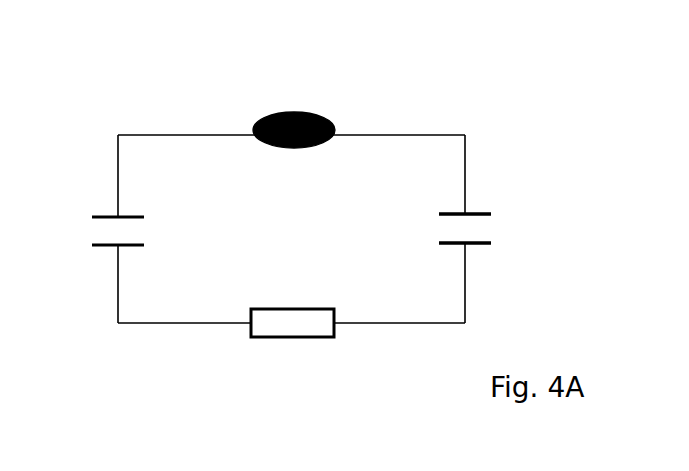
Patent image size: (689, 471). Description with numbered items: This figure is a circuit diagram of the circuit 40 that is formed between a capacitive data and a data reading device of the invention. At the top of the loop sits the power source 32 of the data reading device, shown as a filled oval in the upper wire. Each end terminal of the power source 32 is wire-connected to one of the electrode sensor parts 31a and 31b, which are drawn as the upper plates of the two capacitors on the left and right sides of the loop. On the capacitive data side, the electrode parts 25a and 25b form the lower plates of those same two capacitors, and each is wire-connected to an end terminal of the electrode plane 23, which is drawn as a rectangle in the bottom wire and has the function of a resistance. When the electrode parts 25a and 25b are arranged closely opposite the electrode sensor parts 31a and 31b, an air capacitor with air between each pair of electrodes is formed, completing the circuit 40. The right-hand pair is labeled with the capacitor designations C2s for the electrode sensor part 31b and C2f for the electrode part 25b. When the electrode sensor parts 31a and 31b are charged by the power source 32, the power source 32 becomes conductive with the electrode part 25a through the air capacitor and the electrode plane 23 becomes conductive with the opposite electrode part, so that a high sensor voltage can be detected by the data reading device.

The circuit 40 is at (302, 215).
The power source 32 is at (305, 110).
The electrode sensor part 31a is at (98, 215).
The electrode part 25a is at (97, 252).
The electrode sensor part 31b is at (483, 212).
The electrode part 25b is at (480, 247).
The electrode sensor part capacitance designation C2s is at (504, 214).
The electrode part capacitance designation C2f is at (502, 241).
The electrode plane 23 is at (271, 345).